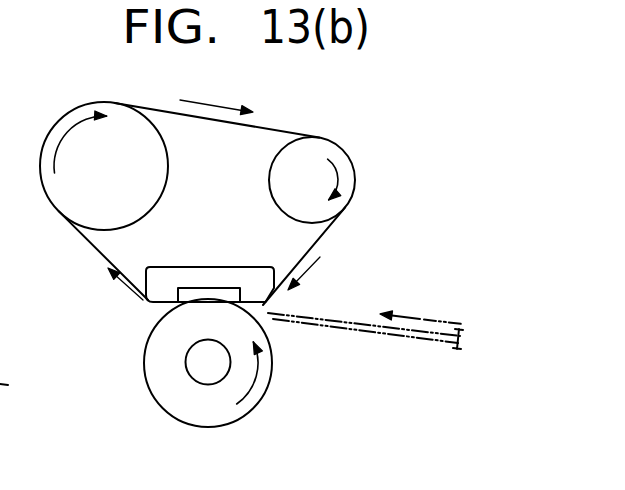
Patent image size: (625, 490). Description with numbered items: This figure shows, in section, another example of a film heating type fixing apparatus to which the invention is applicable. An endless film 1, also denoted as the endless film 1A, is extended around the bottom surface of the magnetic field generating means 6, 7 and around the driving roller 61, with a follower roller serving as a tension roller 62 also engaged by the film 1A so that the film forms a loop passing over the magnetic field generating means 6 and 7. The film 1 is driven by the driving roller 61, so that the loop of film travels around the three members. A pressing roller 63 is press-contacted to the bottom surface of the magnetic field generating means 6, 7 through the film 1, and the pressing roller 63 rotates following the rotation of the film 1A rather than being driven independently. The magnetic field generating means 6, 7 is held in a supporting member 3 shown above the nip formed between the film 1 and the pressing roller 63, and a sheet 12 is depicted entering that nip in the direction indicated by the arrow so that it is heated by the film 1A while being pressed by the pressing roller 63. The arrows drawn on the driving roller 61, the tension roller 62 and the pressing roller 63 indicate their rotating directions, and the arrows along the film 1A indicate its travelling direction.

The film 1 is at (219, 185).
The endless film 1A is at (267, 127).
The driving roller 61 is at (143, 147).
The follower roller (tension roller) 62 is at (285, 167).
The pressing roller 63 is at (262, 388).
The heater holder / support member 3 is at (249, 279).
The magnetic field generating means 6 is at (199, 251).
The magnetic field generating means 7 is at (203, 295).
The recording sheet 12 is at (343, 318).